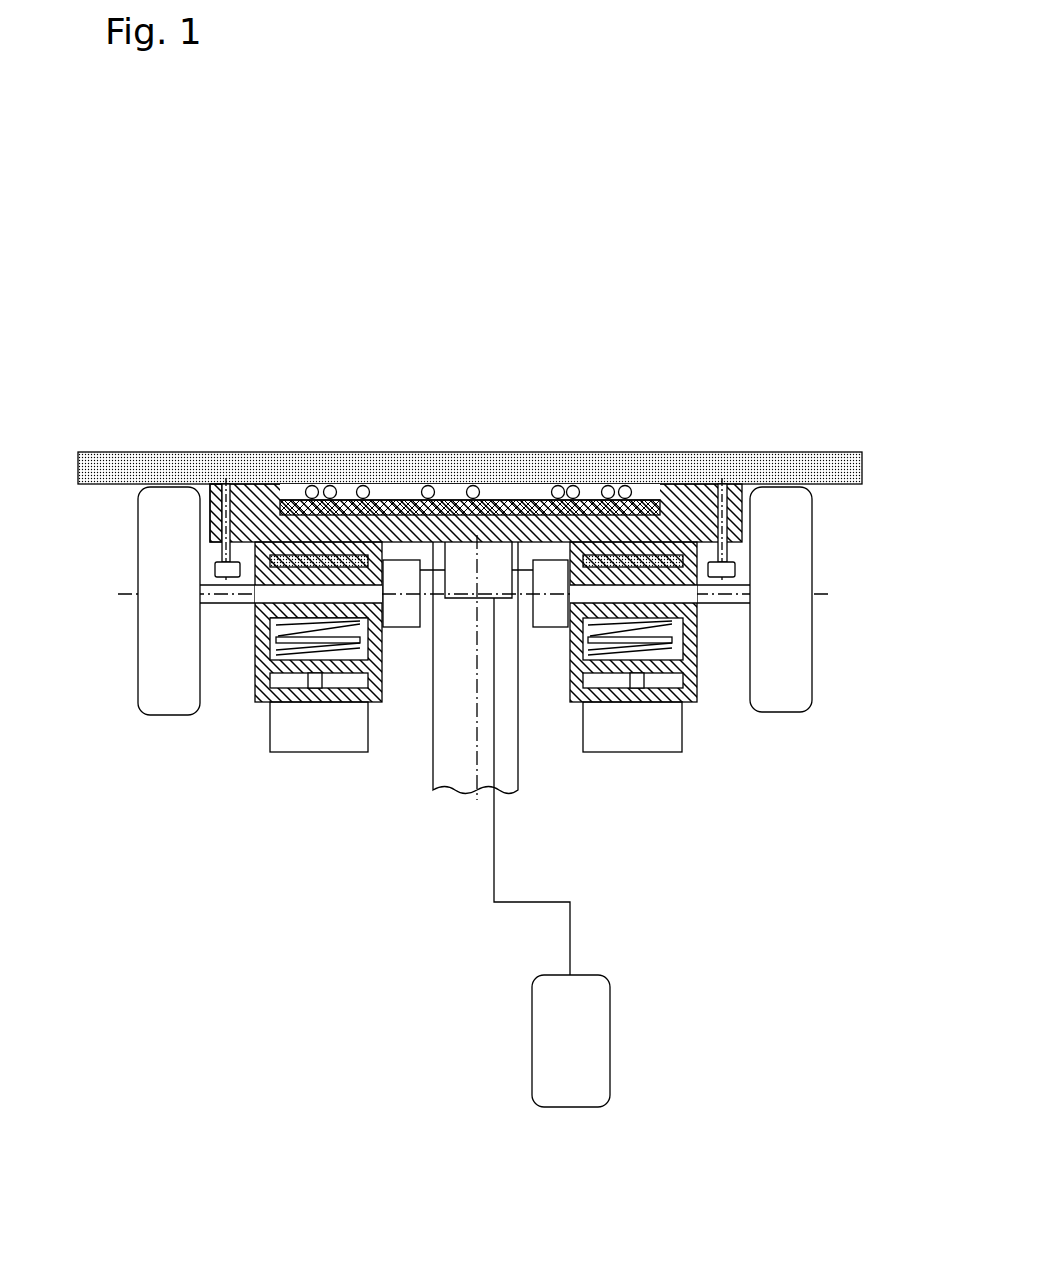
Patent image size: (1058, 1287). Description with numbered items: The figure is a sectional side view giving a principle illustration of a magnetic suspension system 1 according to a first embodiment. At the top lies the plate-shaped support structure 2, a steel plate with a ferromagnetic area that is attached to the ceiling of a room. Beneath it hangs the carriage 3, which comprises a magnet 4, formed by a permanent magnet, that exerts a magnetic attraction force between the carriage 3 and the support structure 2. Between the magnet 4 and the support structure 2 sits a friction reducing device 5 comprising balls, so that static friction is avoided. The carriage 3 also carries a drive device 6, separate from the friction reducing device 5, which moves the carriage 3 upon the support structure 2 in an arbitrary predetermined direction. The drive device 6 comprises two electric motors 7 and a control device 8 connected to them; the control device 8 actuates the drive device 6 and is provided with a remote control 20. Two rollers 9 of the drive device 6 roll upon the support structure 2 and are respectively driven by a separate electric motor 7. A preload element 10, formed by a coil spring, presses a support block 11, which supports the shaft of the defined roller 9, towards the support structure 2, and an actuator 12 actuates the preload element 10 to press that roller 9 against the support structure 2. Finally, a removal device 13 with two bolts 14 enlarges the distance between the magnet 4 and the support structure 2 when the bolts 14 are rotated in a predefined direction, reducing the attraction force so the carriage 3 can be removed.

The magnetic suspension system 1 is at (555, 278).
The support structure 2 is at (824, 472).
The carriage 3 is at (738, 782).
The magnet 4 is at (294, 487).
The friction reducing device 5 is at (378, 487).
The drive device 6 is at (246, 688).
The electric motor 7 is at (405, 628).
The control device 8 is at (455, 590).
The roller 9 is at (157, 680).
The preload element 10 is at (290, 645).
The support block 11 is at (240, 582).
The actuator 12 is at (327, 735).
The removal device 13 is at (215, 490).
The bolt 14 is at (232, 490).
The remote control 20 is at (588, 1065).